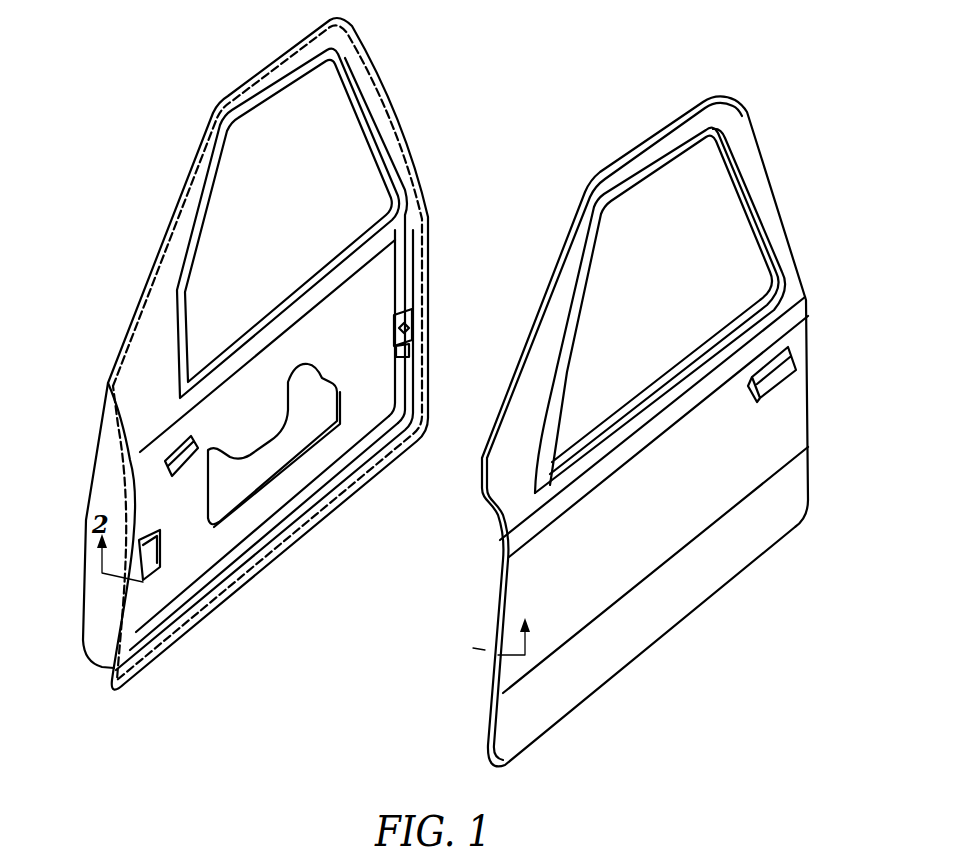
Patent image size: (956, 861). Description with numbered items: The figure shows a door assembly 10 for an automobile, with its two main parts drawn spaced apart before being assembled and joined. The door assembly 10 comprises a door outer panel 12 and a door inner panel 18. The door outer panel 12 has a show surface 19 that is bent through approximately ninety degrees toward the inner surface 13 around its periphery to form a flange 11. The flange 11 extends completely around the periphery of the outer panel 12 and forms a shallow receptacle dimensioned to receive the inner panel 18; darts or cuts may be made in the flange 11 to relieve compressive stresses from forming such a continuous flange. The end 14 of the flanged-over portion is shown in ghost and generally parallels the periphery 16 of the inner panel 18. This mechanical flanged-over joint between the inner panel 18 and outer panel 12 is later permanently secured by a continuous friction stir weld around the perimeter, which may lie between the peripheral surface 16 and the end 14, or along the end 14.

The door assembly 10 is at (772, 78).
The flange 11 is at (698, 92).
The door outer panel 12 is at (773, 210).
The inner surface 13 is at (497, 622).
The end of flanged-over portion 14 is at (167, 220).
The periphery of inner panel 16 is at (140, 292).
The door inner panel 18 is at (372, 292).
The show surface 19 is at (672, 510).